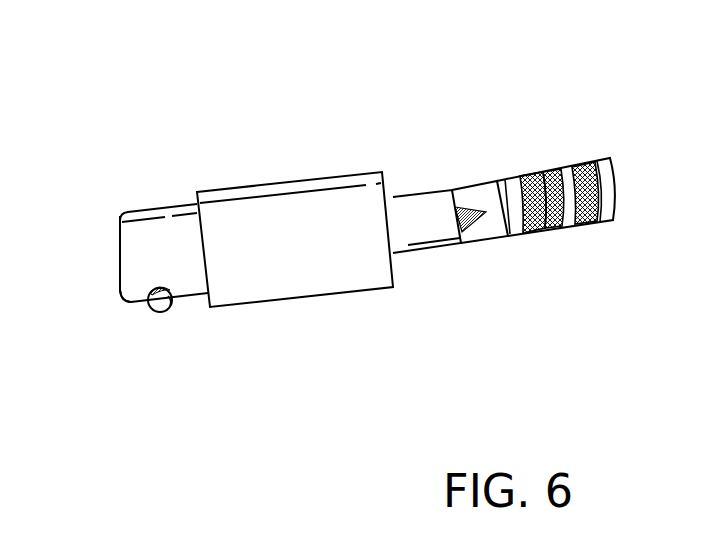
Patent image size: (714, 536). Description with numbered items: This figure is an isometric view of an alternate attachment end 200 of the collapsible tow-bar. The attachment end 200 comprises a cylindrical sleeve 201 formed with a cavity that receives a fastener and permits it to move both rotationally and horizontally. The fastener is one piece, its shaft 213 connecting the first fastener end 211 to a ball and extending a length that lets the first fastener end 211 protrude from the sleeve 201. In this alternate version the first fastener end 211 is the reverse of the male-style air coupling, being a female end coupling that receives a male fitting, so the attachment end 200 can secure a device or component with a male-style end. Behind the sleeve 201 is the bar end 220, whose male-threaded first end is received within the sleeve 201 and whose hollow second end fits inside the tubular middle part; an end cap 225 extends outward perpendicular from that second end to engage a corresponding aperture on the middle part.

The attachment end 200 is at (190, 81).
The bar end 220 is at (143, 223).
The end cap 225 is at (158, 298).
The sleeve 201 is at (287, 203).
The shaft 213 is at (420, 207).
The first fastener end 211 is at (583, 170).